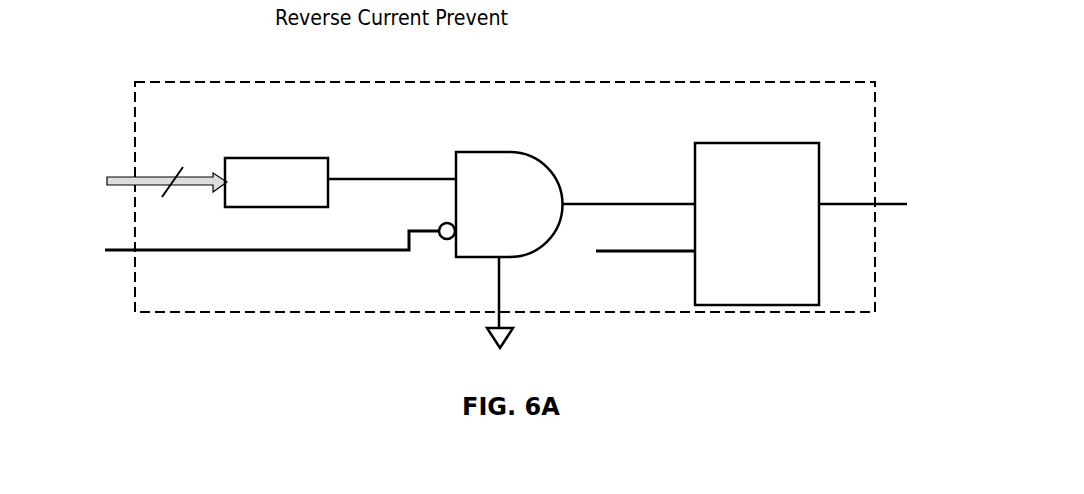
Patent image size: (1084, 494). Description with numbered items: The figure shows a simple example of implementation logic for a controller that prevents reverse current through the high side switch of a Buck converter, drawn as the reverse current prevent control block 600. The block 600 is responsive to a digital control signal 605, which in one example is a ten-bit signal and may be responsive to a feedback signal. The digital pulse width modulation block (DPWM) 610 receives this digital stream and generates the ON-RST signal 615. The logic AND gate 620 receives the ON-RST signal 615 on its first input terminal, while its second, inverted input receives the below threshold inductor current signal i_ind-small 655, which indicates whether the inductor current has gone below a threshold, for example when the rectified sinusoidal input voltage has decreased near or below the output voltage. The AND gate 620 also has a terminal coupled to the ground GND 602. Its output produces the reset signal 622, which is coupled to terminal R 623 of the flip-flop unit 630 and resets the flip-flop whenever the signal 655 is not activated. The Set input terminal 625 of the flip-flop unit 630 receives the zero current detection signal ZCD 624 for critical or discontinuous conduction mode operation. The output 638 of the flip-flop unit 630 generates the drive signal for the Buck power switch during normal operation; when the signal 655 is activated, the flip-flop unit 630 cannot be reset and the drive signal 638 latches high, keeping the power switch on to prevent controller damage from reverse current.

The reverse current prevent control block 600 is at (320, 70).
The ground GND 602 is at (440, 333).
The digital control signal 605 is at (125, 172).
The digital pulse width modulation block (DPWM) 610 is at (260, 157).
The ON-RST signal 615 is at (412, 150).
The logic AND gate 620 is at (493, 150).
The reset signal 622 is at (582, 197).
The terminal R 623 is at (693, 195).
The zero current detection signal (ZCD) 624 is at (632, 272).
The Set input terminal 625 is at (693, 243).
The flip-flop unit 630 is at (733, 135).
The output 638 is at (882, 193).
The below threshold inductor current signal 655 is at (123, 258).